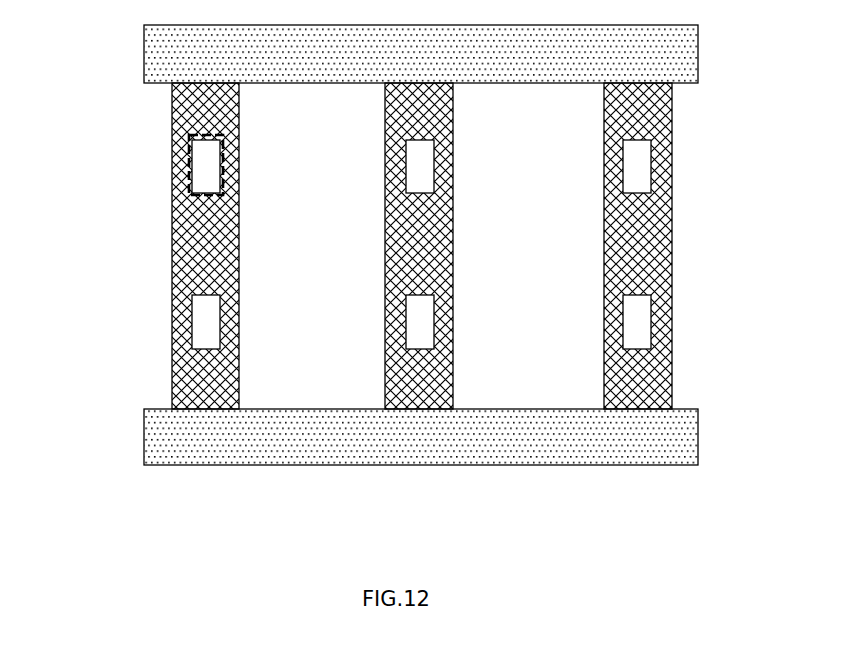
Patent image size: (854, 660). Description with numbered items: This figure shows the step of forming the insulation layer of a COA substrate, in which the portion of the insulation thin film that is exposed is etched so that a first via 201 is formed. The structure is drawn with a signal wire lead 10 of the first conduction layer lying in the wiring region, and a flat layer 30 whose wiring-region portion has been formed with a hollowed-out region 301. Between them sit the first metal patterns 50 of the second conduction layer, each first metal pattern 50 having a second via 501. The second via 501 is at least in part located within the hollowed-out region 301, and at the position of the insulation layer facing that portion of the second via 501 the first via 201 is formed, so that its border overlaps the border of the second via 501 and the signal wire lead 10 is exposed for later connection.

The signal wire lead 10 is at (409, 442).
The flat layer 30 is at (399, 288).
The first metal pattern 50 is at (386, 410).
The first via 201 is at (144, 185).
The hollowed-out region 301 is at (703, 83).
The second via 501 is at (202, 165).